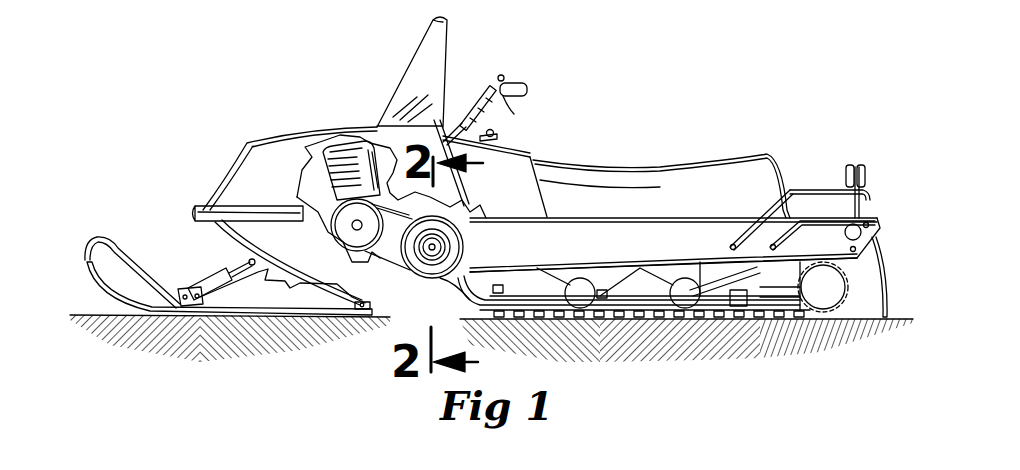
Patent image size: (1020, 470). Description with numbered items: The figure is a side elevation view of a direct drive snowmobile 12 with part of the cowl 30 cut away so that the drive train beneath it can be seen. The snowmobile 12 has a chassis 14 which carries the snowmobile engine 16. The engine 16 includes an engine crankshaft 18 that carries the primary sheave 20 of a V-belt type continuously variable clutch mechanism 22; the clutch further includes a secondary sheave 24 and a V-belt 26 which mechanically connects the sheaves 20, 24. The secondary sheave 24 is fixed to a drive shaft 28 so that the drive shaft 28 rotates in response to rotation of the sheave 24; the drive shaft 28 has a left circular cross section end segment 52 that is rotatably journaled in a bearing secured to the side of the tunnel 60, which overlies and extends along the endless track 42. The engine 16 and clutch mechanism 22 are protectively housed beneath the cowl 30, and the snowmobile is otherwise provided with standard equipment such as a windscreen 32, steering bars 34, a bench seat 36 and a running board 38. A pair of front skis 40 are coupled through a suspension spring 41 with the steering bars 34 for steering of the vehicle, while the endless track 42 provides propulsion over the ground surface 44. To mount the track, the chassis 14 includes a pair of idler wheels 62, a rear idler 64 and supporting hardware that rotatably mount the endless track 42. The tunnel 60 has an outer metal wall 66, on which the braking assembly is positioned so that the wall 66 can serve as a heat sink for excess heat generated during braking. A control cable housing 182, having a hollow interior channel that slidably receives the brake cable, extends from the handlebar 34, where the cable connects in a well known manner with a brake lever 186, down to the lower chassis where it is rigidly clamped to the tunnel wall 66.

The snowmobile 12 is at (266, 133).
The chassis 14 is at (228, 230).
The snowmobile engine 16 is at (348, 150).
The engine crankshaft 18 is at (352, 227).
The primary sheave 20 is at (328, 204).
The V-belt type continuously variable clutch mechanism 22 is at (326, 195).
The secondary sheave 24 is at (421, 279).
The V-belt 26 is at (386, 263).
The drive shaft 28 is at (446, 234).
The cowl 30 is at (298, 135).
The windscreen 32 is at (432, 32).
The steering bars 34 is at (525, 90).
The bench seat 36 is at (703, 163).
The running board 38 is at (677, 262).
The front skis 40 is at (98, 278).
The suspension spring 41 is at (250, 297).
The endless track 42 is at (444, 292).
The ground surface 44 is at (110, 315).
The left circular cross section end segment 52 is at (445, 247).
The tunnel 60 is at (618, 199).
The idler wheels 62 is at (673, 285).
The rear idler 64 is at (833, 278).
The outer metal wall 66 is at (578, 246).
The control cable housing 182 is at (480, 90).
The brake lever 186 is at (514, 114).